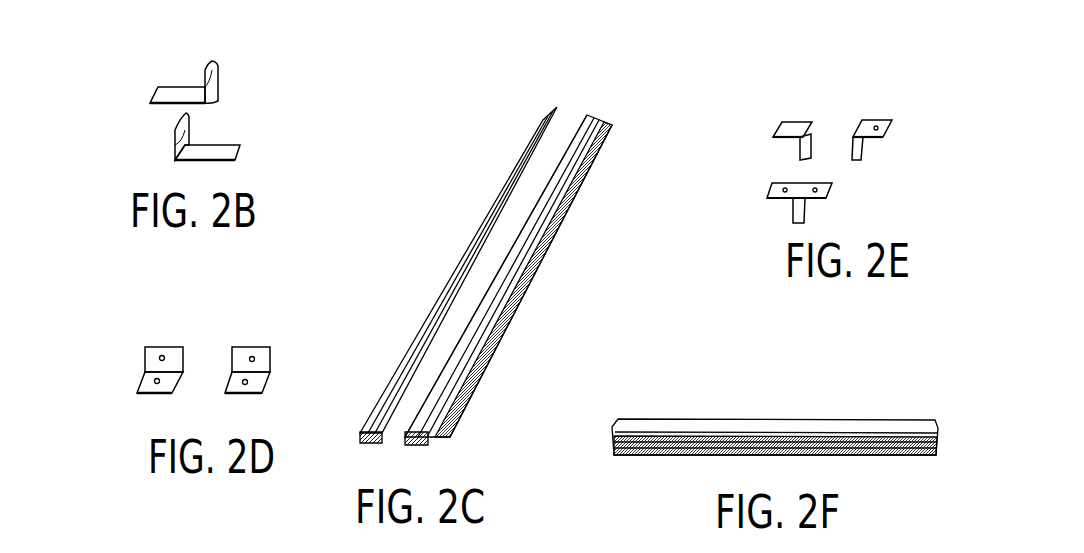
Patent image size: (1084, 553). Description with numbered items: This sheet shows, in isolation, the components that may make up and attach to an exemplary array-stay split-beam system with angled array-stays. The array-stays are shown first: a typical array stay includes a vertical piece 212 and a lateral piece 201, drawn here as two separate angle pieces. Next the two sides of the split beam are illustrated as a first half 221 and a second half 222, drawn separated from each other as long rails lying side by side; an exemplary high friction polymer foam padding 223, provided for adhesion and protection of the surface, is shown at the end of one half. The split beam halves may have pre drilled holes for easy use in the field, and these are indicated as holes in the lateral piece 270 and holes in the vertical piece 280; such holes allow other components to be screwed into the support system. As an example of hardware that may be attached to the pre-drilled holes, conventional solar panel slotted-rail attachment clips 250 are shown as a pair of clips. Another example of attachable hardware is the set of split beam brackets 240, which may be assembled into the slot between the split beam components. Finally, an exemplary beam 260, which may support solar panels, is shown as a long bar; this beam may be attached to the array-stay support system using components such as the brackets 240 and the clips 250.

In FIG. 2B, the lateral piece 201 is at (262, 110).
In FIG. 2B, the vertical piece 212 is at (208, 63).
In FIG. 2C, the first half 221 is at (458, 237).
In FIG. 2C, the second half 222 is at (553, 251).
In FIG. 2C, the high friction polymer foam padding 223 is at (507, 464).
In FIG. 2C, the holes in the lateral piece 270 is at (568, 279).
In FIG. 2C, the holes in the vertical piece 280 is at (534, 276).
In FIG. 2D, the solar panel slotted-rail attachment clips 250 is at (222, 339).
In FIG. 2E, the split beam brackets 240 is at (864, 137).
In FIG. 2F, the beam 260 is at (775, 410).